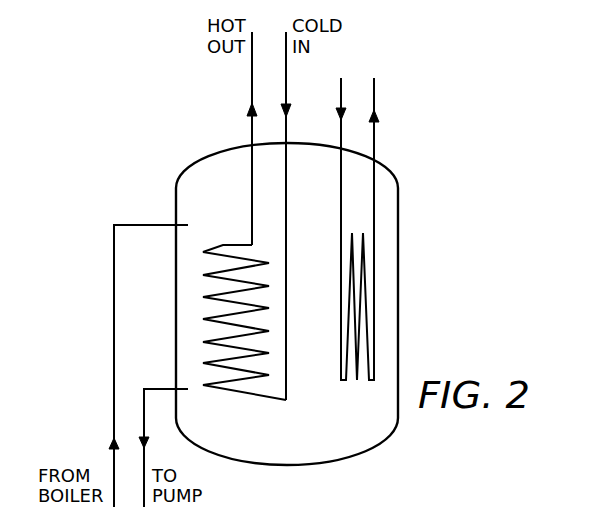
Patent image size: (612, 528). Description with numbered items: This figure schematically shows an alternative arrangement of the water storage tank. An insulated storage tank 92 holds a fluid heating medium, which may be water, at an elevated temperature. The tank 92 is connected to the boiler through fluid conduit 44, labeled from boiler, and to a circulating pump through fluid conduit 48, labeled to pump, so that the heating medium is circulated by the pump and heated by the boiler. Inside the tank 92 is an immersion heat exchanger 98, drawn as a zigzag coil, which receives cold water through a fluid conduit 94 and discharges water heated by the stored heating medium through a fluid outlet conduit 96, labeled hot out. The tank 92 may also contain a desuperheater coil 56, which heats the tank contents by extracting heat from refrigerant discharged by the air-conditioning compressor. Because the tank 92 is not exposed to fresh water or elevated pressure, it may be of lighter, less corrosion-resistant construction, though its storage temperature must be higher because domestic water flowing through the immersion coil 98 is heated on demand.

The fluid conduit 44 is at (113, 325).
The fluid conduit 48 is at (143, 402).
The desuperheater coil 56 is at (370, 362).
The insulated storage tank 92 is at (355, 457).
The fluid conduit 94 is at (288, 127).
The fluid outlet conduit 96 is at (252, 128).
The immersion heat exchanger 98 is at (223, 243).